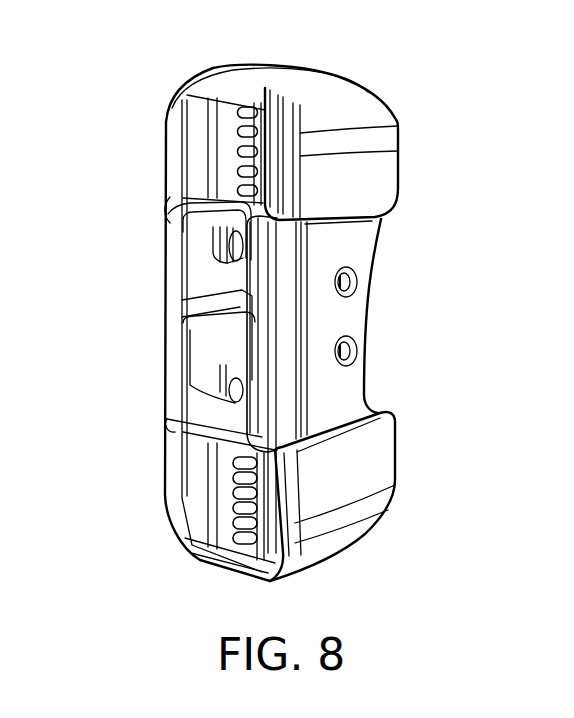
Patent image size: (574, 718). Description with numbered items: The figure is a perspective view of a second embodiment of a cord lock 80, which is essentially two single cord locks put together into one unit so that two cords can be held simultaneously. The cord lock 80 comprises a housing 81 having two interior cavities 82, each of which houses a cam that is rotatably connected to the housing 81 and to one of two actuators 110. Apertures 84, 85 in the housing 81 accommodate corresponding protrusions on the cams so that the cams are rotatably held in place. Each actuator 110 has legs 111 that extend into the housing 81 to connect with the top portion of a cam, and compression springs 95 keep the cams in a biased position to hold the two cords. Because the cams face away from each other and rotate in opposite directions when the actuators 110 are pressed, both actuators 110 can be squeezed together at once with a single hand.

The cord lock 80 is at (98, 347).
The housing 81 is at (353, 400).
The interior cavities 82 is at (197, 275).
The aperture 84 is at (357, 284).
The aperture 85 is at (356, 351).
The compression springs 95 is at (232, 135).
The actuators 110 is at (377, 111).
The legs 111 is at (194, 220).